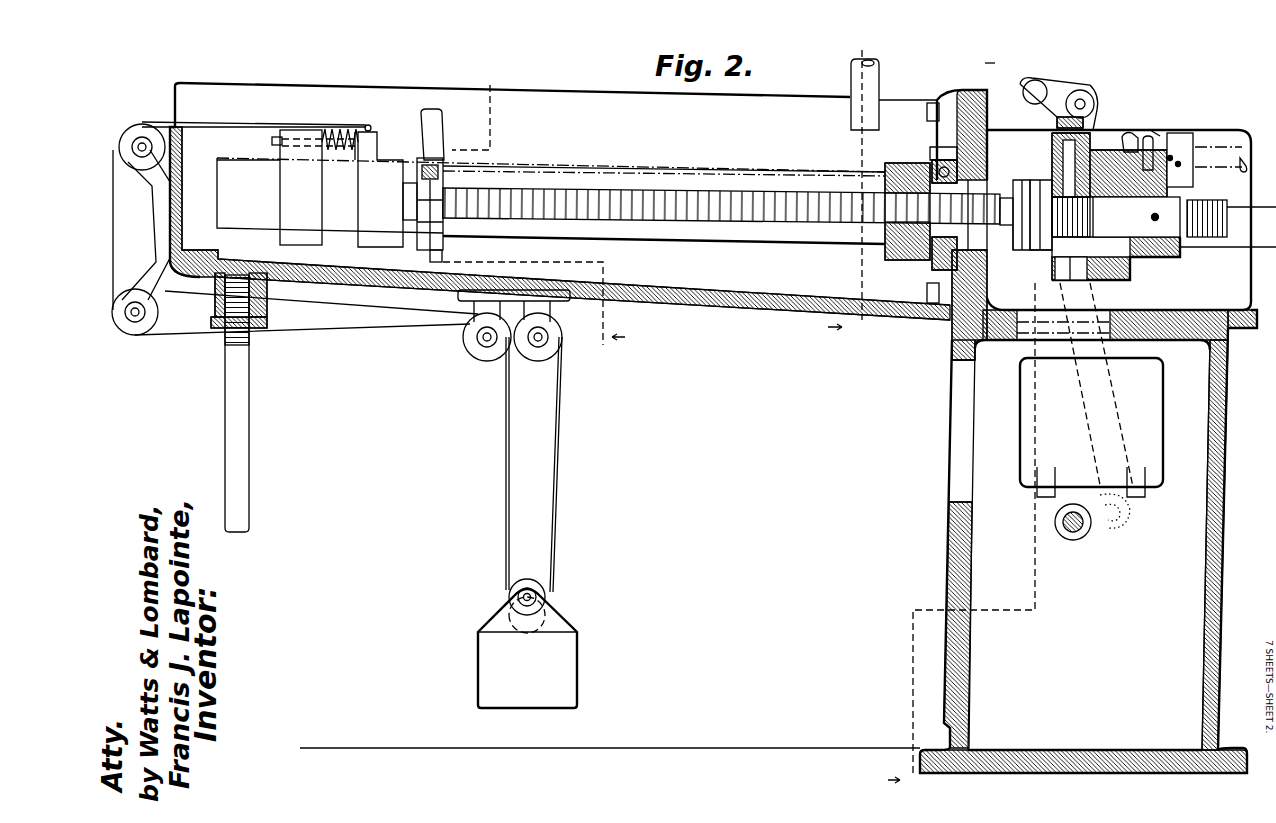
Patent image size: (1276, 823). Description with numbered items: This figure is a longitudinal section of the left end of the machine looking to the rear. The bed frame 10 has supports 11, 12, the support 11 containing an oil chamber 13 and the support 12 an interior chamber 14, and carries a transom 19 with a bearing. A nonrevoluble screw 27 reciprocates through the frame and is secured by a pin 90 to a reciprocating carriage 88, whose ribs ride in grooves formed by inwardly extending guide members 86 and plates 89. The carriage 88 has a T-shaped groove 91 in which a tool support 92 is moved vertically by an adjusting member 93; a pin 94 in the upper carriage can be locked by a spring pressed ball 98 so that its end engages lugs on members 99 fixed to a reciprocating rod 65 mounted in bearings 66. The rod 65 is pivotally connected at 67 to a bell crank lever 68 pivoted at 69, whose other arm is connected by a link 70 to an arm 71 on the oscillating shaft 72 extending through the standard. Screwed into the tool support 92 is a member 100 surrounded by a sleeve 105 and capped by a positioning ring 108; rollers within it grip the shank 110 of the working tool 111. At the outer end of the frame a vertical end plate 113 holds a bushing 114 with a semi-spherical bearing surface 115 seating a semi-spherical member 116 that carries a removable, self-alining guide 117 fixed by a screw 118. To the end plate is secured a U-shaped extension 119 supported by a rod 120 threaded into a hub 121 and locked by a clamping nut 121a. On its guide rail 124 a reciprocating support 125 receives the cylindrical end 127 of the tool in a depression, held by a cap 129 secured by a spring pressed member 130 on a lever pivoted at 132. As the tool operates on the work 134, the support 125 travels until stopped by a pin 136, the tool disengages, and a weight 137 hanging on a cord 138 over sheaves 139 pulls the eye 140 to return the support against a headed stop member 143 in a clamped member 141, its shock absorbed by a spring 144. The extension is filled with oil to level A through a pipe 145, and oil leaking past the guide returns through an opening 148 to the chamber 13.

The bed frame 10 is at (1228, 330).
The support 11 is at (1230, 548).
The support 12 is at (534, 215).
The oil chamber 13 is at (1222, 645).
The interior chamber 14 is at (852, 197).
The transom 19 is at (1150, 132).
The nonrevoluble screw 27 is at (1203, 208).
The reciprocating rod 65 is at (1220, 152).
The bearings 66 is at (1182, 136).
The pivotal connection 67 is at (1119, 220).
The bell crank lever 68 is at (1048, 90).
The pivot 69 is at (1090, 97).
The link 70 is at (1114, 395).
The arm 71 is at (1104, 535).
The oscillating shaft 72 is at (1073, 541).
The guide members 86 is at (1228, 250).
The reciprocating carriage 88 is at (1112, 282).
The plates 89 is at (1251, 208).
The pin 90 is at (1157, 222).
The T-shaped groove 91 is at (1070, 281).
The tool support 92 is at (1055, 242).
The adjusting member 93 is at (1086, 126).
The pin 94 is at (1160, 140).
The spring pressed ball 98 is at (1186, 160).
The members 99 is at (1135, 148).
The member 100 is at (1053, 196).
The sleeve 105 is at (1040, 250).
The positioning ring 108 is at (1006, 213).
The shank 110 is at (1022, 232).
The working tool 111 is at (584, 200).
The vertical end plate 113 is at (975, 92).
The bushing 114 is at (940, 165).
The semi-spherical bearing surface 115 is at (948, 264).
The semi-spherical member 116 is at (927, 292).
The guide 117 is at (887, 176).
The screw 118 is at (930, 155).
The U-shaped extension 119 is at (718, 310).
The rod 120 is at (251, 466).
The hub 121 is at (215, 312).
The clamping nut 121a is at (212, 330).
The guide rail 124 is at (222, 205).
The reciprocating support 125 is at (408, 222).
The cylindrical end 127 is at (405, 200).
The cap 129 is at (436, 262).
The spring pressed member 130 is at (436, 150).
The pivot 132 is at (446, 222).
The work 134 is at (932, 250).
The pin 136 is at (855, 232).
The weight 137 is at (557, 648).
The cord 138 is at (213, 124).
The sheaves 139 is at (142, 124).
The eye 140 is at (372, 126).
The member 141 is at (283, 182).
The headed stop member 143 is at (357, 158).
The spring 144 is at (340, 128).
The pipe 145 is at (880, 82).
The opening 148 is at (1040, 326).
The oil level A is at (690, 168).